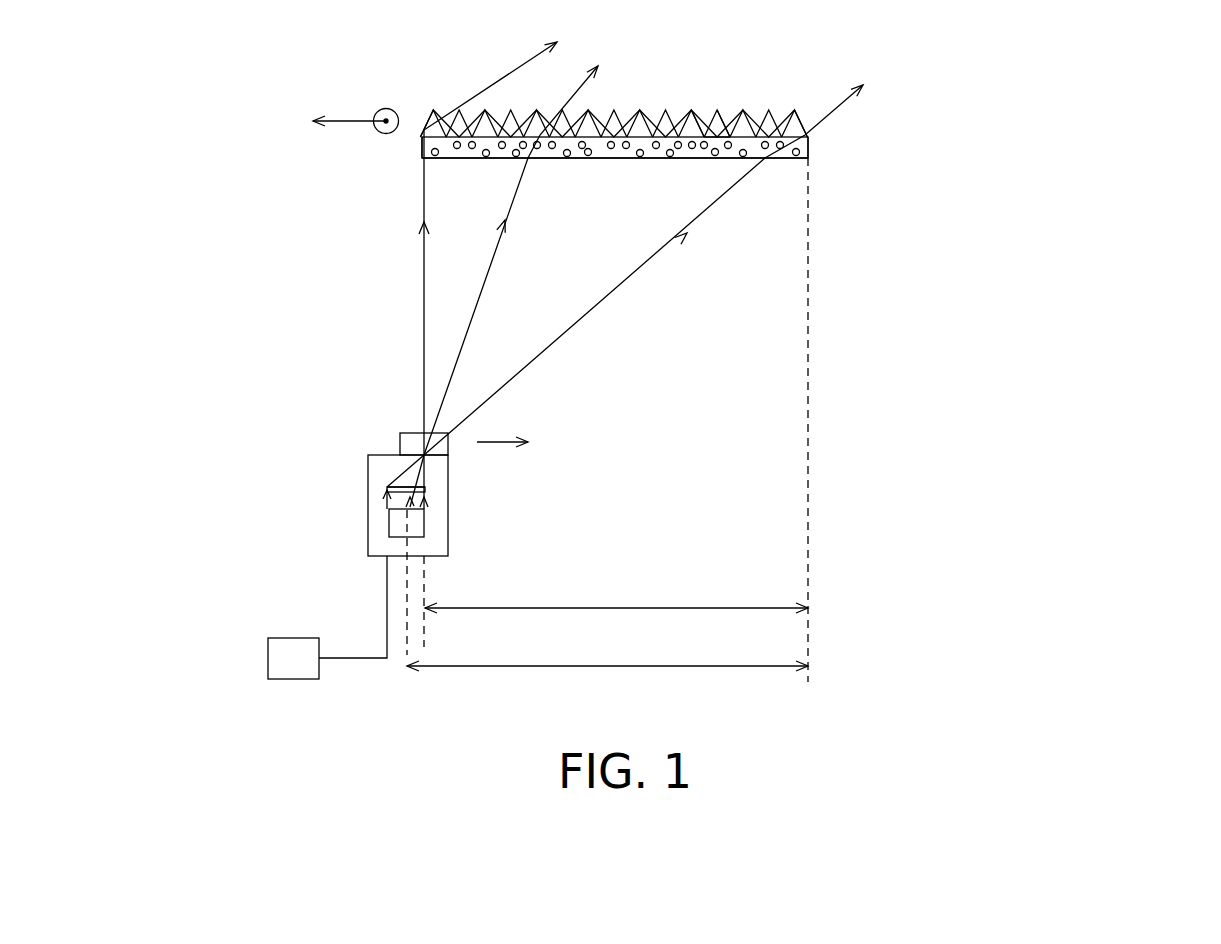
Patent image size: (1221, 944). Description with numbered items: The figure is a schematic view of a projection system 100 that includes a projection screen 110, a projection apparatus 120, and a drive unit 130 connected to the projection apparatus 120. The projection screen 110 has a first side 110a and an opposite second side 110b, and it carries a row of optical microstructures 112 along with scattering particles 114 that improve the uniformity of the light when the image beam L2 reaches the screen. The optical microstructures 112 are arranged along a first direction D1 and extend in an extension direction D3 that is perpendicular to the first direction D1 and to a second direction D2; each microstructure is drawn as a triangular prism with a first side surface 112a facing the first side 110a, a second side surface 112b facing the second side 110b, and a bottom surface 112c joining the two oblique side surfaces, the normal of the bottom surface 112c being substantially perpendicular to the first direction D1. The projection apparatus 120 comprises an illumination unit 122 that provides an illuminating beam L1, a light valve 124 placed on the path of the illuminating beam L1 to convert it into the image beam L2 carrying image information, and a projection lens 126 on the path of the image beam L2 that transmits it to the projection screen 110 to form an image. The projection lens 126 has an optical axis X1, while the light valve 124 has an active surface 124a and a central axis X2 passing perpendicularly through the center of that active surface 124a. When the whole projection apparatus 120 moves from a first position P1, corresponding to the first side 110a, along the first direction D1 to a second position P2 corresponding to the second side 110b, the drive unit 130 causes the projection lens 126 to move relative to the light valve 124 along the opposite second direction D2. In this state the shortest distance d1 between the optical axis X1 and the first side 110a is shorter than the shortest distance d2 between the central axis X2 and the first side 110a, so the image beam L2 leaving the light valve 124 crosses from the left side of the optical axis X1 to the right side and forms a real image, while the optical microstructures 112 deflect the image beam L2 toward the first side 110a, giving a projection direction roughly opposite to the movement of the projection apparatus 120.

The projection system 100 is at (1200, 577).
The projection screen 110 is at (703, 119).
The first side 110a is at (810, 145).
The second side 110b is at (420, 148).
The optical microstructures 112 is at (770, 127).
The first side surface 112a is at (728, 122).
The second side surface 112b is at (707, 123).
The bottom surface 112c is at (717, 140).
The scattering particles 114 is at (808, 162).
The projection apparatus 120 is at (331, 482).
The illumination unit 122 is at (353, 527).
The light valve 124 is at (387, 488).
The active surface 124a is at (392, 480).
The projection lens 126 is at (400, 445).
The drive unit 130 is at (268, 660).
The illuminating beam L1 is at (430, 500).
The image beam L2 is at (424, 312).
The first direction D1 is at (349, 107).
The second direction D2 is at (507, 425).
The extension direction D3 is at (386, 108).
The first position P1 is at (808, 553).
The second position P2 is at (380, 562).
The optical axis X1 is at (425, 583).
The central axis X2 is at (403, 627).
The shortest distance d1 is at (616, 593).
The shortest distance d2 is at (607, 652).